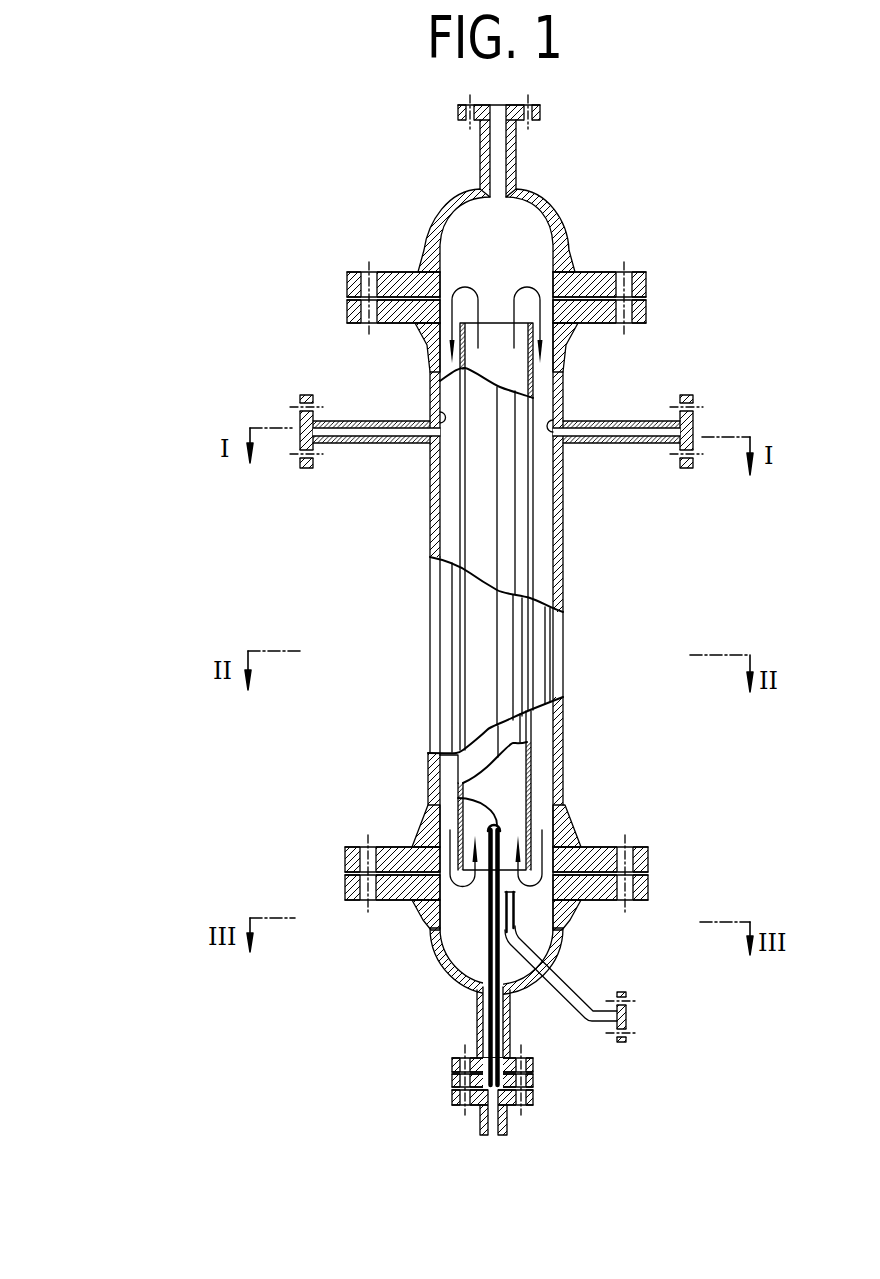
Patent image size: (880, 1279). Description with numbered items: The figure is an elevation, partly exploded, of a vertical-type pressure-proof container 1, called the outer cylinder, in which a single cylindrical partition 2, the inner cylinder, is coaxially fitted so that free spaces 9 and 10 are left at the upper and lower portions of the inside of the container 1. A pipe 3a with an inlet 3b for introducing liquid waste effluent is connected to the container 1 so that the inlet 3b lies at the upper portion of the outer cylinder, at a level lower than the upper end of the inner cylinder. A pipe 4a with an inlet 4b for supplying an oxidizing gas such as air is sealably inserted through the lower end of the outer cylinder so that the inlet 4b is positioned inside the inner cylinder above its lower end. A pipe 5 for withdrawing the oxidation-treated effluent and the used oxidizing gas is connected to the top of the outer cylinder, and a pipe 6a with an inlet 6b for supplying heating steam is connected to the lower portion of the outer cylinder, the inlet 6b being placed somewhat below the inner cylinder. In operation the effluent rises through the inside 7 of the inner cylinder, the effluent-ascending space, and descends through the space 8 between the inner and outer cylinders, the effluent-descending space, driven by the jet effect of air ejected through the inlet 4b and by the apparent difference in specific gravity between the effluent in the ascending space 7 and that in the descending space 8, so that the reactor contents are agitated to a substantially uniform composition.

The vertical-type pressure-proof container 1 is at (565, 497).
The cylindrical partition 2 is at (520, 553).
The pipe 3a is at (394, 432).
The inlet 3b is at (438, 414).
The pipe 4a is at (488, 1018).
The inlet 4b is at (456, 798).
The pipe 5 is at (504, 159).
The pipe 6a is at (563, 988).
The inlet 6b is at (512, 890).
The effluent-ascending space 7 is at (432, 387).
The effluent-descending space 8 is at (450, 518).
The free space 9 is at (538, 219).
The free space 10 is at (453, 907).